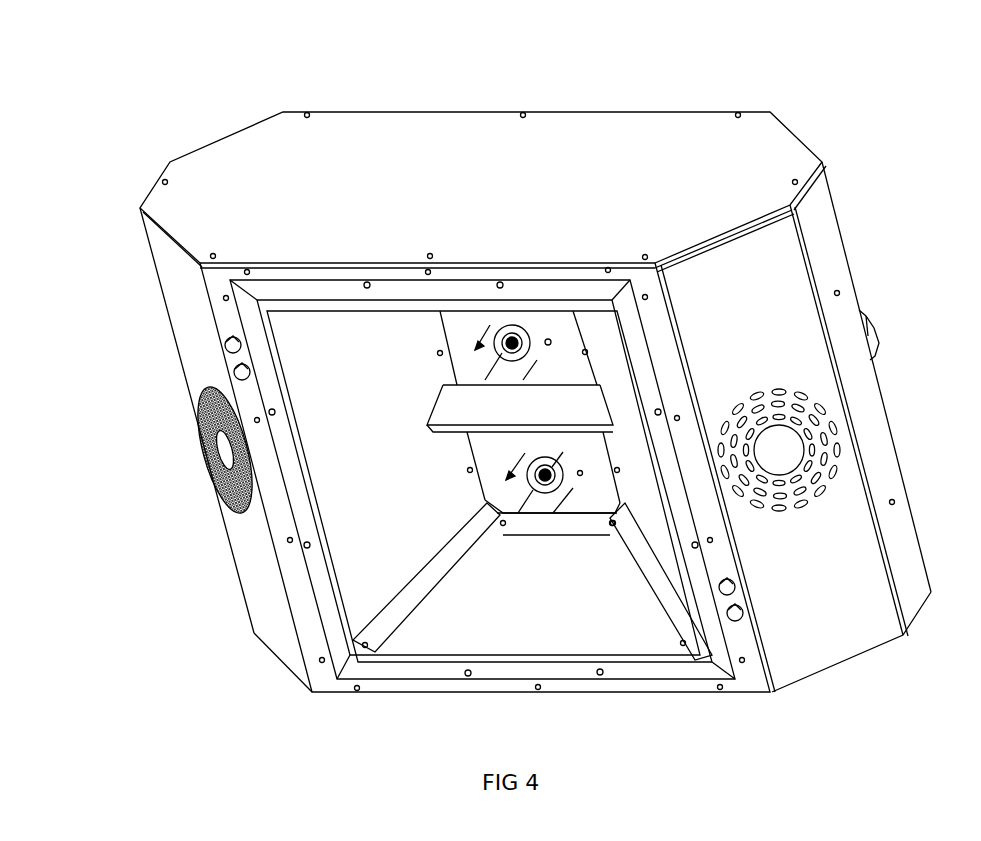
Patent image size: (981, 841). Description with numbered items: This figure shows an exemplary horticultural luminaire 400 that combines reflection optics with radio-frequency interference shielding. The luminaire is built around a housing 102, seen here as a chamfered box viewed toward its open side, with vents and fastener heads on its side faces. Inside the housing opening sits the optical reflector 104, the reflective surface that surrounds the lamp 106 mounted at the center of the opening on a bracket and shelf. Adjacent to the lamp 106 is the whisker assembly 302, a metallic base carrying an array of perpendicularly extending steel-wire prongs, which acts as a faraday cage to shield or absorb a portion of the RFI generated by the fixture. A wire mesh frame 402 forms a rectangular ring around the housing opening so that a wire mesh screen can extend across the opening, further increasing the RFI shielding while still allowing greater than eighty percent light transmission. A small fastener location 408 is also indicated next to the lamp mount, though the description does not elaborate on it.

The horticultural luminaire 400 is at (515, 355).
The housing 102 is at (535, 402).
The optical reflector 104 is at (487, 477).
The lamp 106 is at (512, 338).
The whisker assembly 302 is at (527, 326).
The wire mesh frame 402 is at (330, 607).
The fastener hole 408 is at (552, 341).